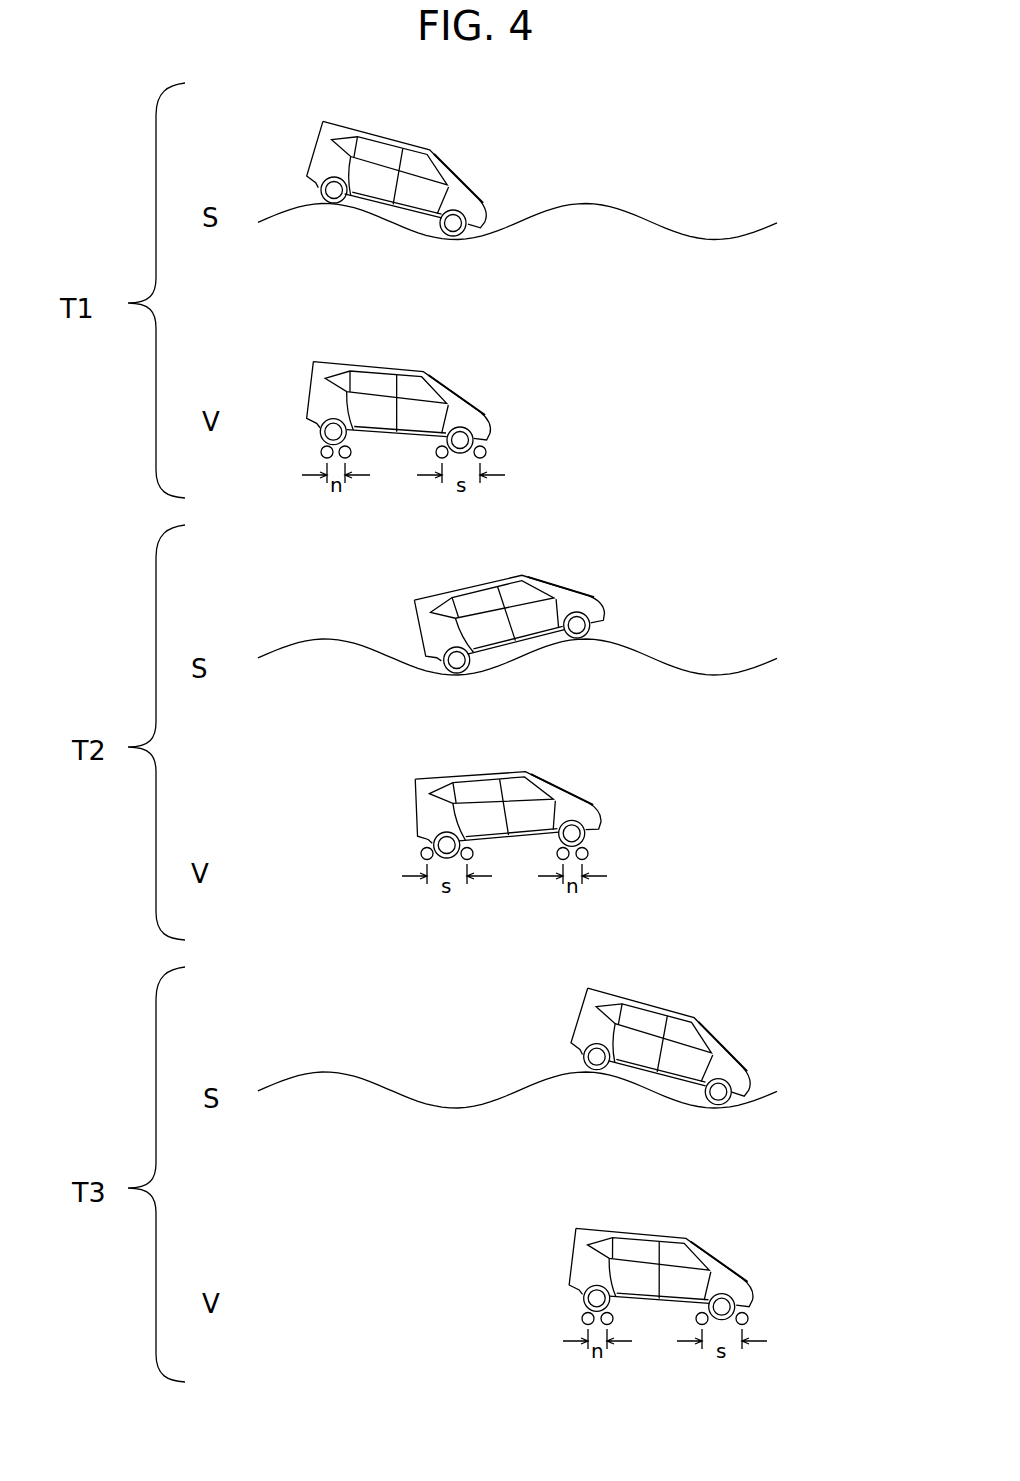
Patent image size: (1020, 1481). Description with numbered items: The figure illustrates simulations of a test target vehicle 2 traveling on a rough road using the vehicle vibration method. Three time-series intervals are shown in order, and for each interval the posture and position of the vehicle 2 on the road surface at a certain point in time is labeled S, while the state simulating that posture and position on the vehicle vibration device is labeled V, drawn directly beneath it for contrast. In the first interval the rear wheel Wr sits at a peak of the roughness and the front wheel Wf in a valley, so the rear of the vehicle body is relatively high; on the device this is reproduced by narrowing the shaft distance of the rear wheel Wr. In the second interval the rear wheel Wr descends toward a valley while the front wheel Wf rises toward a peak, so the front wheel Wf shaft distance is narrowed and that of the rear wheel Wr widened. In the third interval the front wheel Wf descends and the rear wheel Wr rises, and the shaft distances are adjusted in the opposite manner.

The vehicle 2 is at (430, 150).
The rear wheel Wr is at (325, 180).
The front wheel Wf is at (473, 207).